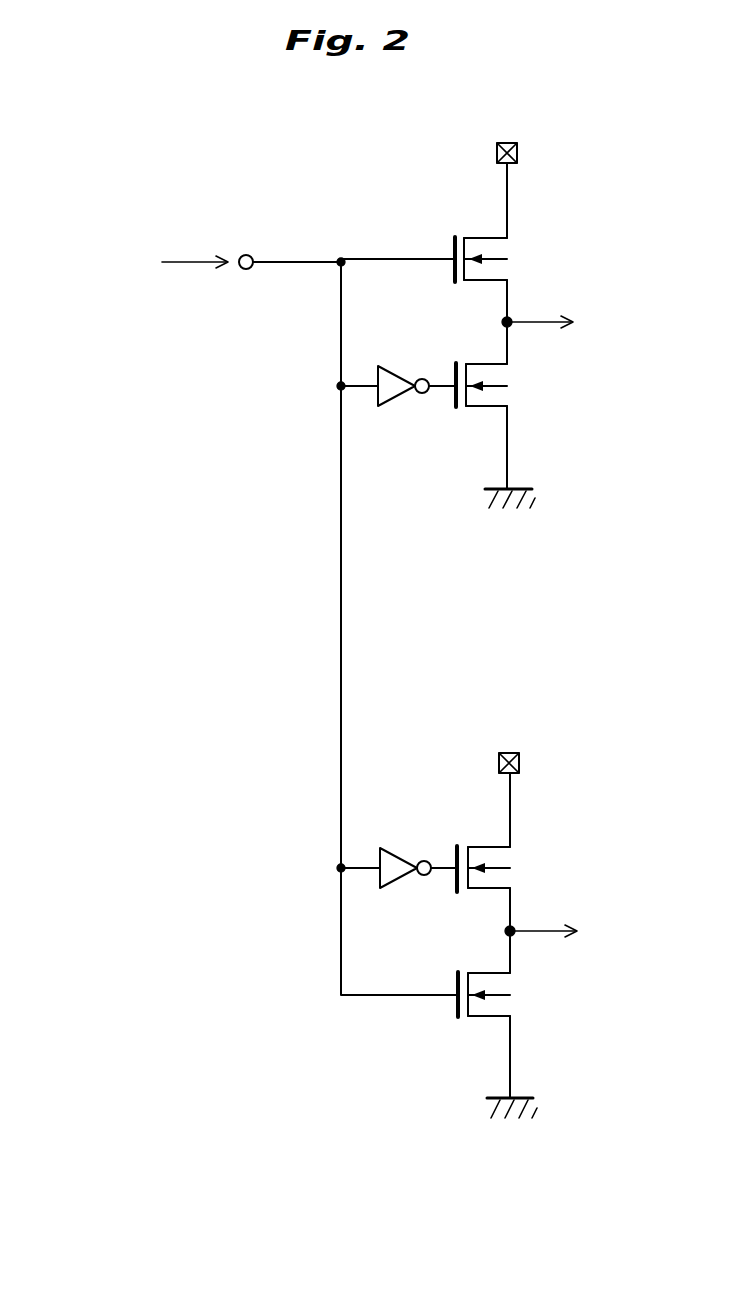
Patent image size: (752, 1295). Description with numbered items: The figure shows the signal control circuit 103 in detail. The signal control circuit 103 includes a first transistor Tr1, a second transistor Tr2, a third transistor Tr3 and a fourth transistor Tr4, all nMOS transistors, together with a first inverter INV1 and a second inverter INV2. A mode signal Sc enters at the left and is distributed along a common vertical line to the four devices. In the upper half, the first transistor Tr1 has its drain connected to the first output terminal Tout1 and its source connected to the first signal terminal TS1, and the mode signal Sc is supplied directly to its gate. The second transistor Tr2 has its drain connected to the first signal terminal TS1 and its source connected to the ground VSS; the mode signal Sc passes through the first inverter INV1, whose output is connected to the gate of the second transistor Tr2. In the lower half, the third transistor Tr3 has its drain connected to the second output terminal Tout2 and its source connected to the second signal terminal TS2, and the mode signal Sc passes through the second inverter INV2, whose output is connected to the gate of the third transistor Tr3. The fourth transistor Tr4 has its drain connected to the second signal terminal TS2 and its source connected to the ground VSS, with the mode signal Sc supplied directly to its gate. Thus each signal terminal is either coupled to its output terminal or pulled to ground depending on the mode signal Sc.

The signal control circuit 103 is at (232, 562).
The mode signal Sc is at (226, 261).
The first output terminal Tout1 is at (517, 151).
The second output terminal Tout2 is at (520, 761).
The first transistor Tr1 is at (485, 238).
The second transistor Tr2 is at (487, 407).
The third transistor Tr3 is at (487, 847).
The fourth transistor Tr4 is at (488, 1016).
The first signal terminal TS1 is at (507, 322).
The second signal terminal TS2 is at (510, 931).
The first inverter INV1 is at (400, 372).
The second inverter INV2 is at (402, 852).
The ground VSS is at (510, 779).